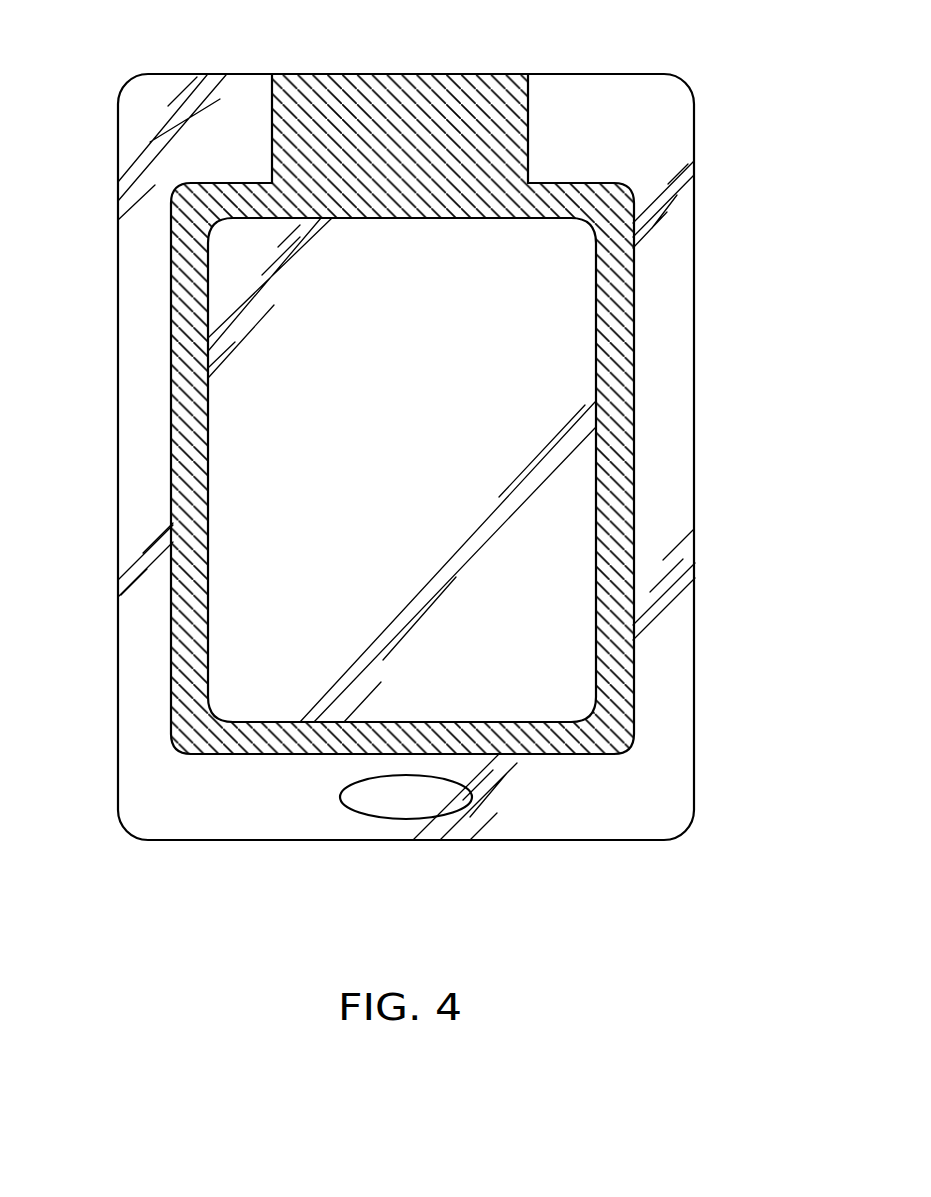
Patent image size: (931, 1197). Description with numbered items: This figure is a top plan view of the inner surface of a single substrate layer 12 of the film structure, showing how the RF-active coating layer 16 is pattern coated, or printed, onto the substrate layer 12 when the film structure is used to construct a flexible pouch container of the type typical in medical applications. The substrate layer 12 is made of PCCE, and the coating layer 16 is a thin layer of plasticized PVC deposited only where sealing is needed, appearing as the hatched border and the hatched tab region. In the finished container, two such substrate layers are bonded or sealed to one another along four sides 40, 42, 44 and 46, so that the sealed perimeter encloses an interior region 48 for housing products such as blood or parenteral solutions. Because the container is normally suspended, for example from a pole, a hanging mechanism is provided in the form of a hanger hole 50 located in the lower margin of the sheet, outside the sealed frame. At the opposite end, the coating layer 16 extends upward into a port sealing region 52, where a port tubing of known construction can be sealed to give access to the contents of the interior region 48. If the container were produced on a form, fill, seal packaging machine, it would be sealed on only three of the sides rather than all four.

The substrate layer 12 is at (686, 382).
The coating layer 16 is at (615, 280).
The side 40 is at (577, 75).
The side 42 is at (695, 518).
The side 44 is at (593, 840).
The side 46 is at (118, 427).
The interior region 48 is at (542, 623).
The hanger hole 50 is at (388, 803).
The port sealing region 52 is at (397, 103).